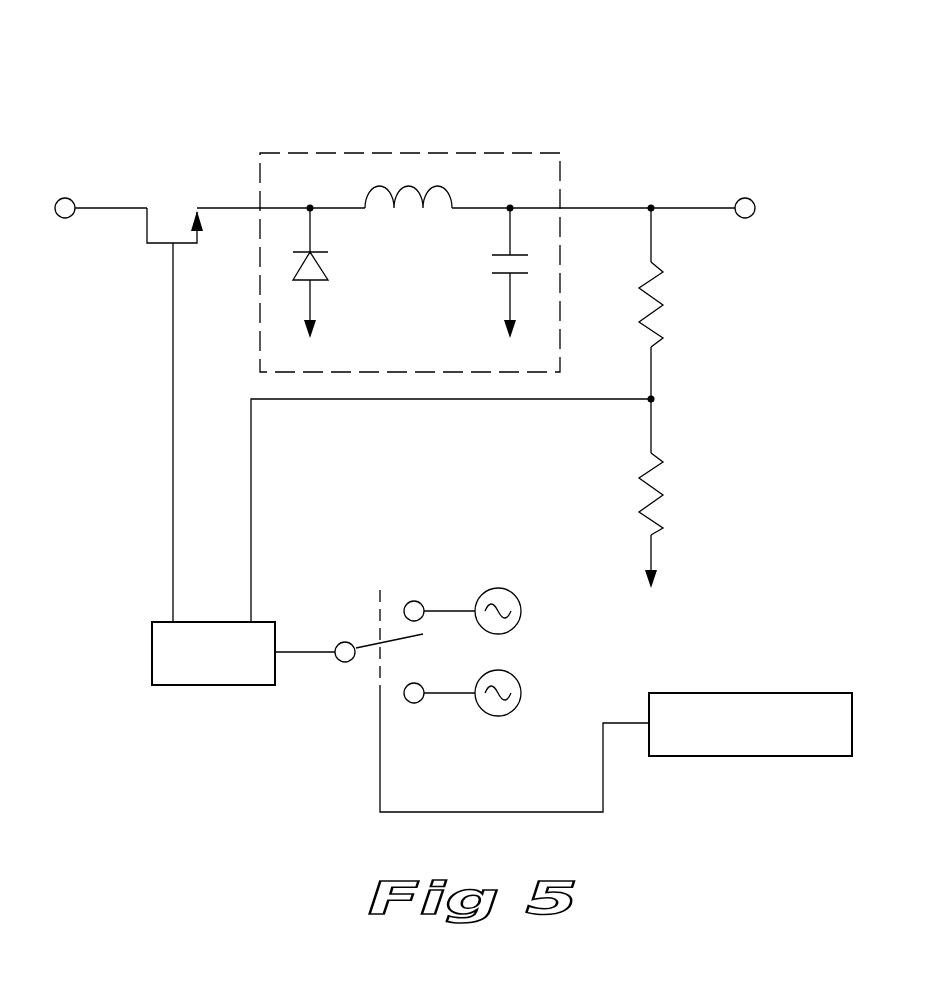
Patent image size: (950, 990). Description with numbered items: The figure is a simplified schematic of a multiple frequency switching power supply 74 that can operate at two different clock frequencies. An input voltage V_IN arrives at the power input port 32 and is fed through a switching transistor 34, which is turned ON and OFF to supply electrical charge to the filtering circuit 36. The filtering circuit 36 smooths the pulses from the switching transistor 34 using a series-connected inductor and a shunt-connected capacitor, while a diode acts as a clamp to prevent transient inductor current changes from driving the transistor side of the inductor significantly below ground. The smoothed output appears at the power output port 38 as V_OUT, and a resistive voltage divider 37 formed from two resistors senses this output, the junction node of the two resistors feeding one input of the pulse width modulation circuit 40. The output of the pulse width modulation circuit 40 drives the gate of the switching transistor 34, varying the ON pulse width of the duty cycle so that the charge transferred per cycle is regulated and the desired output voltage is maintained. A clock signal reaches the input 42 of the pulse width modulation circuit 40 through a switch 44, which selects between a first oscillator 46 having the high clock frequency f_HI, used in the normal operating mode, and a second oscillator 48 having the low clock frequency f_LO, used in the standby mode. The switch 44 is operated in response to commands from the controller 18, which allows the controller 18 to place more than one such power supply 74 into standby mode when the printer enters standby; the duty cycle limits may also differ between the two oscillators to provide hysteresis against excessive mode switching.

The multiple frequency switching power supply 74 is at (138, 54).
The power input port 32 is at (66, 198).
The switching transistor 34 is at (147, 226).
The filtering circuit 36 is at (348, 152).
The voltage divider 37 is at (668, 165).
The power output port 38 is at (744, 219).
The pulse width modulation circuit 40 is at (152, 655).
The input 42 is at (278, 648).
The switch 44 is at (350, 687).
The first oscillator 46 is at (496, 717).
The second oscillator 48 is at (488, 588).
The controller 18 is at (705, 693).